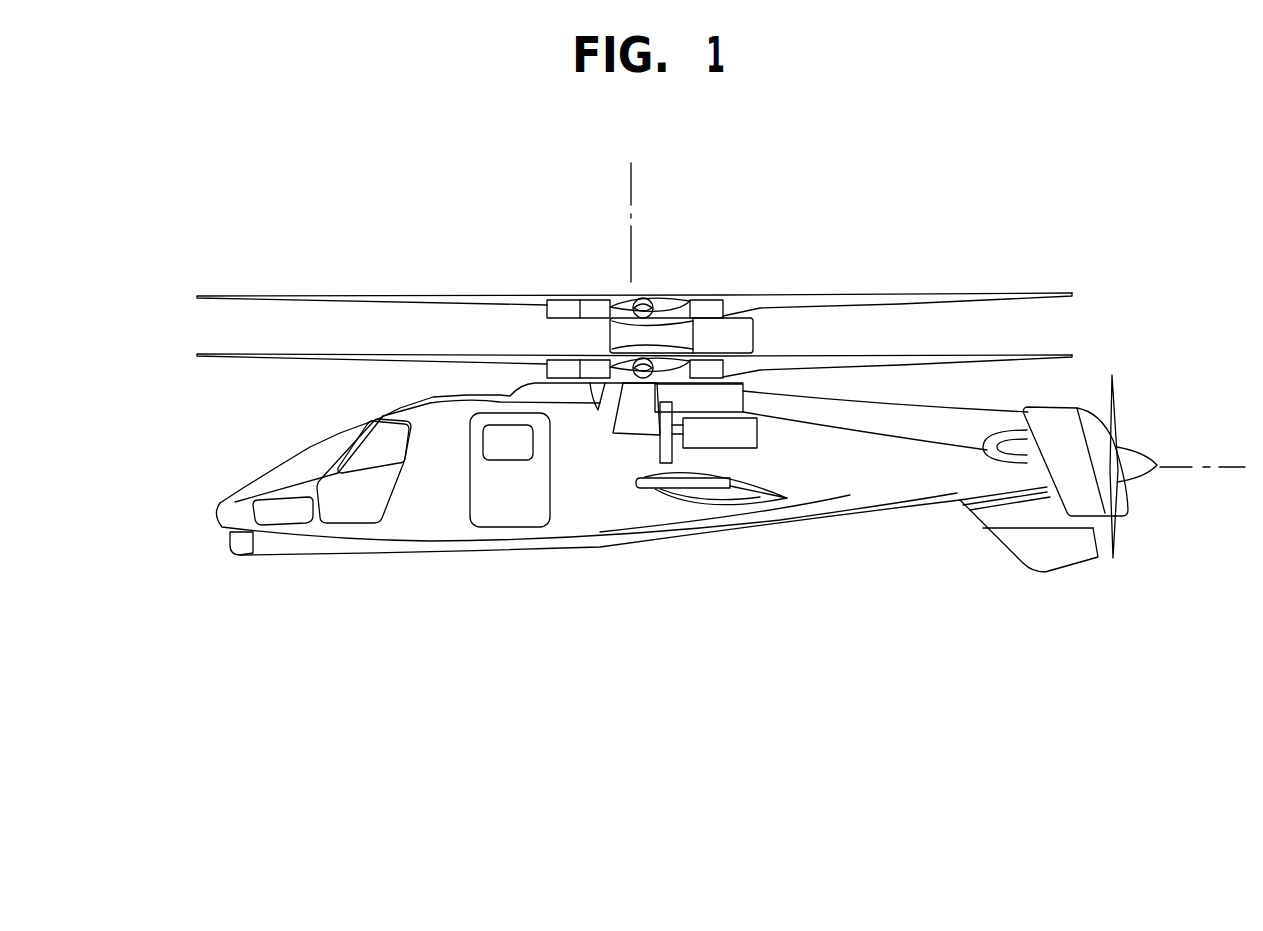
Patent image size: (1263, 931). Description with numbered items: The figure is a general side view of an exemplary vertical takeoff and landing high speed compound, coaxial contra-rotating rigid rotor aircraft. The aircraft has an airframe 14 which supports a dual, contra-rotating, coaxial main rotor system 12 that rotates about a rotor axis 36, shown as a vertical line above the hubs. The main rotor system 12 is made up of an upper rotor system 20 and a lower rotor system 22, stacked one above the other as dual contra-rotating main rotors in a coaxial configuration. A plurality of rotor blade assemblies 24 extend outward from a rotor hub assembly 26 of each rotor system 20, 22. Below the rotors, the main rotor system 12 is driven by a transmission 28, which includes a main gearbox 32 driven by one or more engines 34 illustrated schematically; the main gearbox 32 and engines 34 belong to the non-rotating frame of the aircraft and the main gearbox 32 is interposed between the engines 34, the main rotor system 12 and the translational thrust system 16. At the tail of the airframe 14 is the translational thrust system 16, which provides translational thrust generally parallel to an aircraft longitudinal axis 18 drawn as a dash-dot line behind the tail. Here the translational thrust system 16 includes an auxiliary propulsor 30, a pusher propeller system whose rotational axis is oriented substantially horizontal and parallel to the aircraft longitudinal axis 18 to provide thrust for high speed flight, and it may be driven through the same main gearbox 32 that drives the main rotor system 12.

The main rotor system 12 is at (598, 260).
The airframe 14 is at (582, 548).
The translational thrust system 16 is at (1118, 392).
The aircraft longitudinal axis 18 is at (1192, 470).
The upper rotor system 20 is at (237, 296).
The lower rotor system 22 is at (234, 358).
The rotor blade assemblies 24 is at (381, 296).
The rotor hub assembly 26 is at (583, 299).
The transmission 28 is at (624, 426).
The auxiliary propulsor 30 is at (1132, 453).
The main gearbox 32 is at (660, 452).
The engines 34 is at (745, 433).
The rotor axis 36 is at (630, 200).